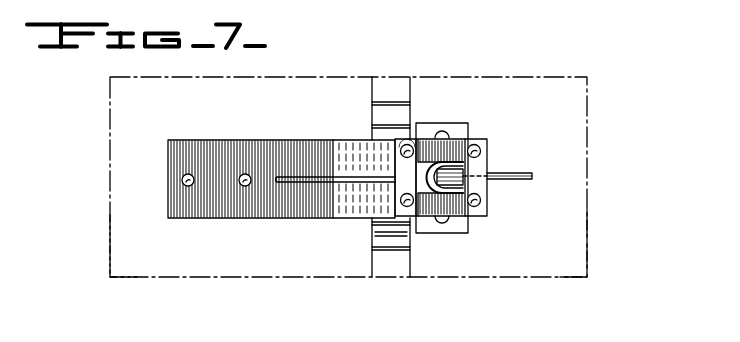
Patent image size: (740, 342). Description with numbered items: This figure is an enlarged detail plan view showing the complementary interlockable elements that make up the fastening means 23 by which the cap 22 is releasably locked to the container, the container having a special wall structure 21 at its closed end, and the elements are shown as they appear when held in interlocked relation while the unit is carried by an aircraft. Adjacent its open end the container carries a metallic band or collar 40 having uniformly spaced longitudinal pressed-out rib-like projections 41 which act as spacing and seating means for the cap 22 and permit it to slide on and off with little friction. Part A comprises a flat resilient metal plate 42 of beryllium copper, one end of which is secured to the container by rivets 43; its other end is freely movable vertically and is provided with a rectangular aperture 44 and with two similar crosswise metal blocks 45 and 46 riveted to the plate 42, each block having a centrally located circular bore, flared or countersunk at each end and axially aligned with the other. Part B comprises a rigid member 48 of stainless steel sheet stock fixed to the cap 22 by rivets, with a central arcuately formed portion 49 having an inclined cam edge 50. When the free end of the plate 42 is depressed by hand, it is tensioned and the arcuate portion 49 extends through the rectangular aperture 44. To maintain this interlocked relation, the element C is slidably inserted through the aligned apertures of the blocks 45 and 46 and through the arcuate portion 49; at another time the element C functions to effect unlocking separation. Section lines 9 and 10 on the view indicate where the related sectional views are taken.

The section line 9- 9 is at (388, 35).
The section line 10- 10 is at (302, 103).
The special wall structure 21 is at (128, 244).
The closure member, lid, or cap 22 is at (575, 246).
The fastening means 23 is at (331, 266).
The metallic band or collar 40 is at (373, 258).
The rib-like elements or projections 41 is at (393, 248).
The flat resilient metal plate 42 is at (245, 118).
The rivets 43 is at (239, 183).
The rectangular aperture 44 is at (447, 158).
The metal piece or block 45 is at (402, 142).
The metal piece or block 46 is at (478, 212).
The rigid member 48 is at (468, 230).
The central arcuately formed portion 49 is at (427, 167).
The inclined cam edge 50 is at (480, 161).
The element C is at (510, 181).